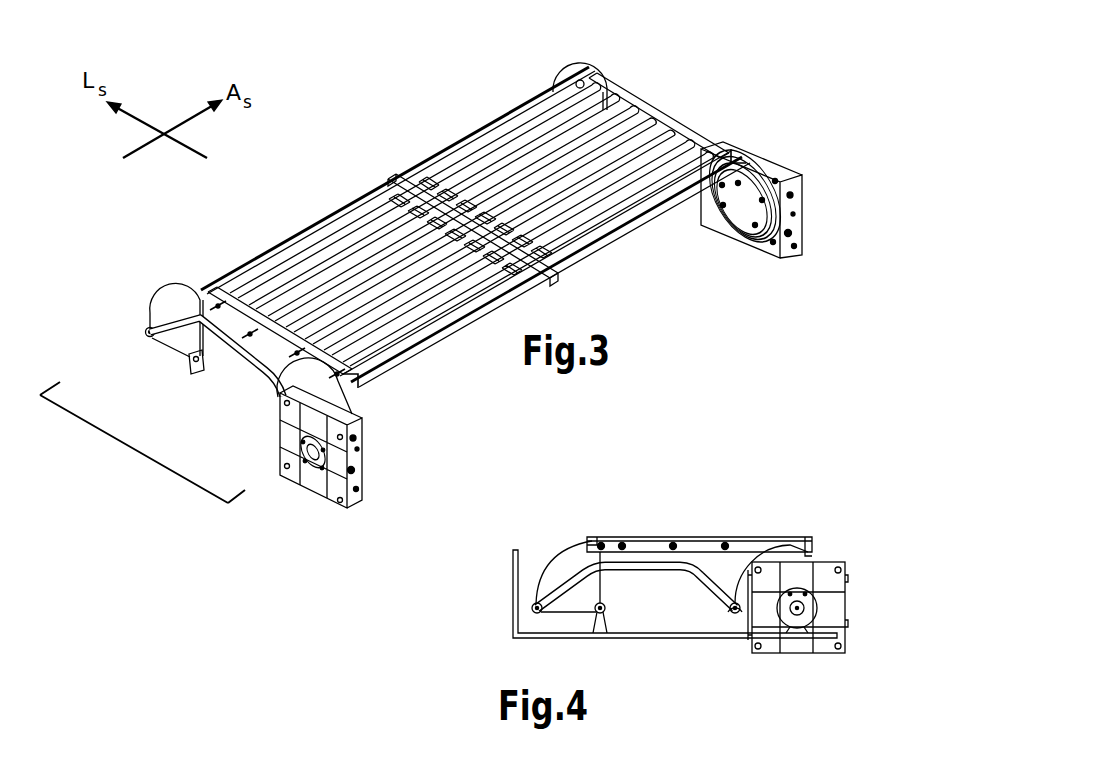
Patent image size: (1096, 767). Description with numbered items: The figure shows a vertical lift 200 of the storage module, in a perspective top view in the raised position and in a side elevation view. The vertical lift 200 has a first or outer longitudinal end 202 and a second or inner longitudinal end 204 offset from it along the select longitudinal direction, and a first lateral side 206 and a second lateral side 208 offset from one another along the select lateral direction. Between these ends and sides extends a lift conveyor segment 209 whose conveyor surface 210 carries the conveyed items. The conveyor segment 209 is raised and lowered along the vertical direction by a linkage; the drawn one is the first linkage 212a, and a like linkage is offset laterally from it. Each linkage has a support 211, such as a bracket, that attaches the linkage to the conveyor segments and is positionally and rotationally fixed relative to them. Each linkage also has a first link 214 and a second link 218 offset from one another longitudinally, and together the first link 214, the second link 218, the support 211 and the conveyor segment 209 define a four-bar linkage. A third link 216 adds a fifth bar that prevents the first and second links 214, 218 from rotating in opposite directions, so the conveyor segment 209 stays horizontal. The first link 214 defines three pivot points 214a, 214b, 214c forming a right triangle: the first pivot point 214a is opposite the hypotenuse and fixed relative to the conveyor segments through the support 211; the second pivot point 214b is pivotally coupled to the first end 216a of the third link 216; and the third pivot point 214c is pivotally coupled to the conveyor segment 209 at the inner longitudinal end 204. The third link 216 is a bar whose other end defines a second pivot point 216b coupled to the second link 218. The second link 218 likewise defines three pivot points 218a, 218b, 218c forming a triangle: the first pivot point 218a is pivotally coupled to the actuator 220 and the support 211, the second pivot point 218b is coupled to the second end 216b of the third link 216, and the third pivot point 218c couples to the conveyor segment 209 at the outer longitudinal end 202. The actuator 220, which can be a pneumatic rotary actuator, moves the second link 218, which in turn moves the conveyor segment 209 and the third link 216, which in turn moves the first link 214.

In FIG. 3, the vertical lift 200 is at (800, 126).
In FIG. 4, the vertical lift 200 is at (882, 520).
In FIG. 3, the first or outer longitudinal end 202 is at (810, 155).
In FIG. 3, the second or inner longitudinal end 204 is at (610, 58).
In FIG. 3, the first lateral side 206 is at (138, 308).
In FIG. 3, the second lateral side 208 is at (550, 58).
In FIG. 3, the lift conveyor segment 209 is at (423, 162).
In FIG. 3, the conveyor surface 210 is at (375, 228).
In FIG. 4, the support 211 is at (585, 636).
In FIG. 3, the first linkage 212a is at (140, 455).
In FIG. 3, the first link 214 is at (182, 338).
In FIG. 4, the first pivot point of the first link 214a is at (604, 612).
In FIG. 4, the second pivot point of the first link 214b is at (533, 612).
In FIG. 4, the third pivot point of the first link 214c is at (598, 552).
In FIG. 3, the third link 216 is at (241, 347).
In FIG. 4, the first pivot point of the third link 216a is at (534, 605).
In FIG. 4, the second pivot point of the third link 216b is at (730, 608).
In FIG. 3, the second link 218 is at (325, 388).
In FIG. 4, the first pivot point of the second link 218a is at (796, 613).
In FIG. 4, the second pivot point of the second link 218b is at (734, 615).
In FIG. 4, the third pivot point of the second link 218c is at (793, 552).
In FIG. 3, the actuator 220 is at (315, 487).
In FIG. 4, the actuator 220 is at (802, 648).